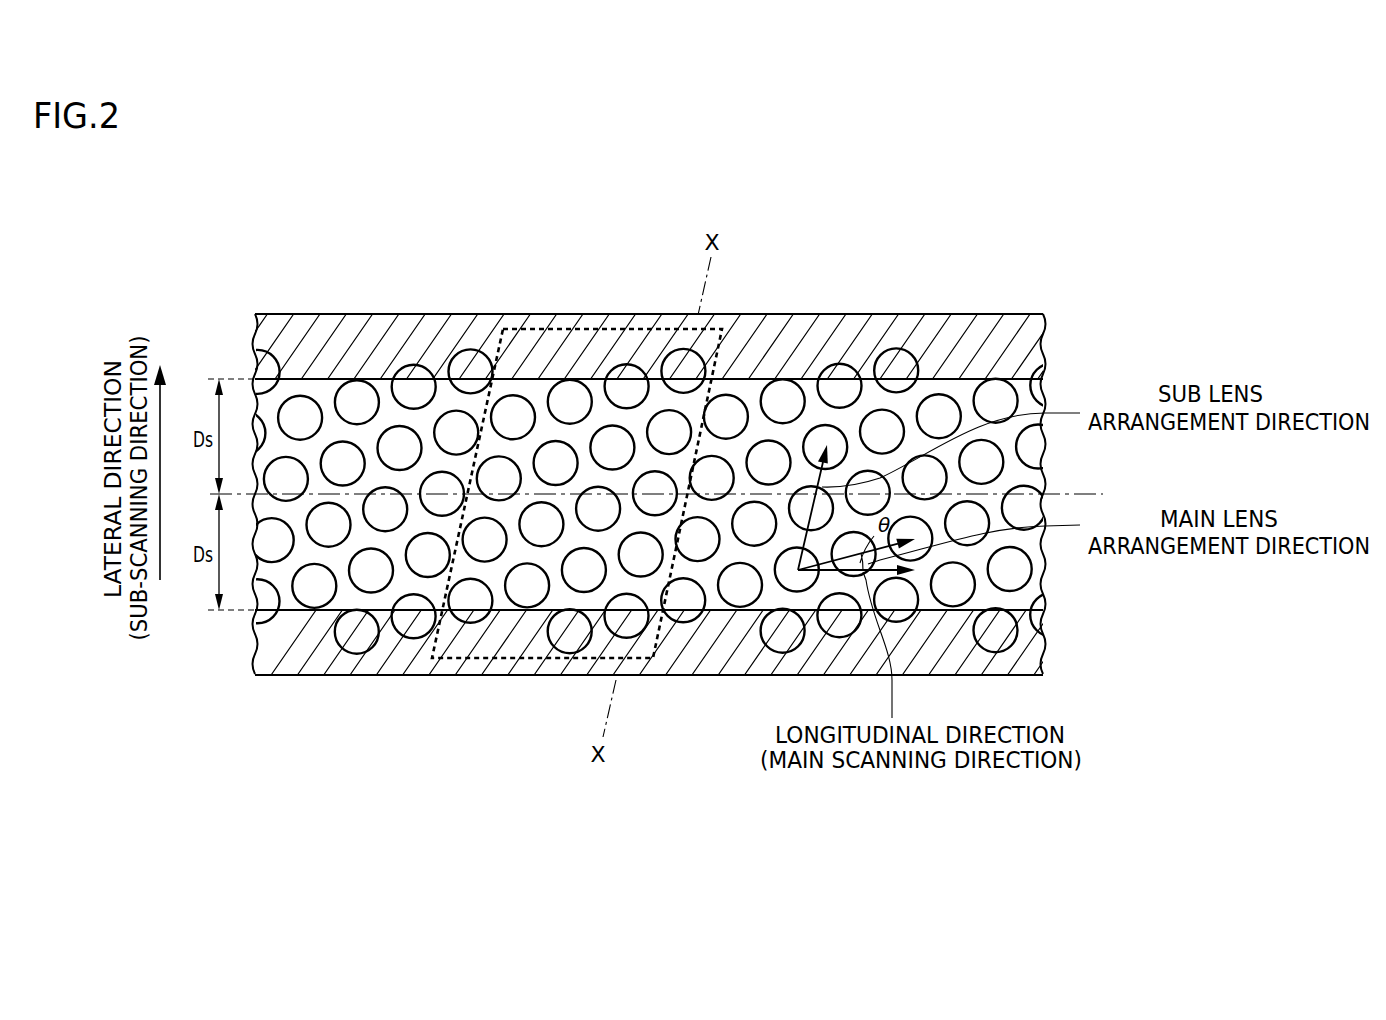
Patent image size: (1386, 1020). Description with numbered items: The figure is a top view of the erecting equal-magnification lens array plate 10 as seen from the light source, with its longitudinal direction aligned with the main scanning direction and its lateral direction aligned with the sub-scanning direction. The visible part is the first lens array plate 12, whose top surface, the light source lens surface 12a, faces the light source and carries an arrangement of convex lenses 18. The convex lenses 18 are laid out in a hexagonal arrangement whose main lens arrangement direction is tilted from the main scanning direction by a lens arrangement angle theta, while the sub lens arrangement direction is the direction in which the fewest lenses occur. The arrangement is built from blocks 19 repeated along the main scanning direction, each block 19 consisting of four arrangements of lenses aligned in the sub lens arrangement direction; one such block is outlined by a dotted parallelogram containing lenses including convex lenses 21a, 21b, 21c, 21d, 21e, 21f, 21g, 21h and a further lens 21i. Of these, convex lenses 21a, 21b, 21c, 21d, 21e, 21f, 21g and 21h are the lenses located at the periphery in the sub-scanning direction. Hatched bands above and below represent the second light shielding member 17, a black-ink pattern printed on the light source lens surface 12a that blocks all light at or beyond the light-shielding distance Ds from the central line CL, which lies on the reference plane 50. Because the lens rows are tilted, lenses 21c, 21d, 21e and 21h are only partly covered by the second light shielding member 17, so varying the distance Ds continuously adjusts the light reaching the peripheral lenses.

The erecting equal-magnification lens array plate 10 is at (921, 278).
The first lens array plate 12 is at (1054, 394).
The light source lens surface 12a is at (1047, 594).
The second light shielding member 17 is at (996, 314).
The convex lenses 18 is at (300, 405).
The block 19 is at (719, 325).
The convex lens 21a is at (513, 392).
The convex lens 21b is at (572, 386).
The convex lens 21c is at (627, 376).
The convex lens 21d is at (684, 362).
The convex lens 21e is at (468, 615).
The convex lens 21f is at (522, 600).
The convex lens 21g is at (586, 590).
The convex lens 21h is at (617, 643).
The lens 21i is at (657, 515).
The reference plane 50 is at (1088, 490).